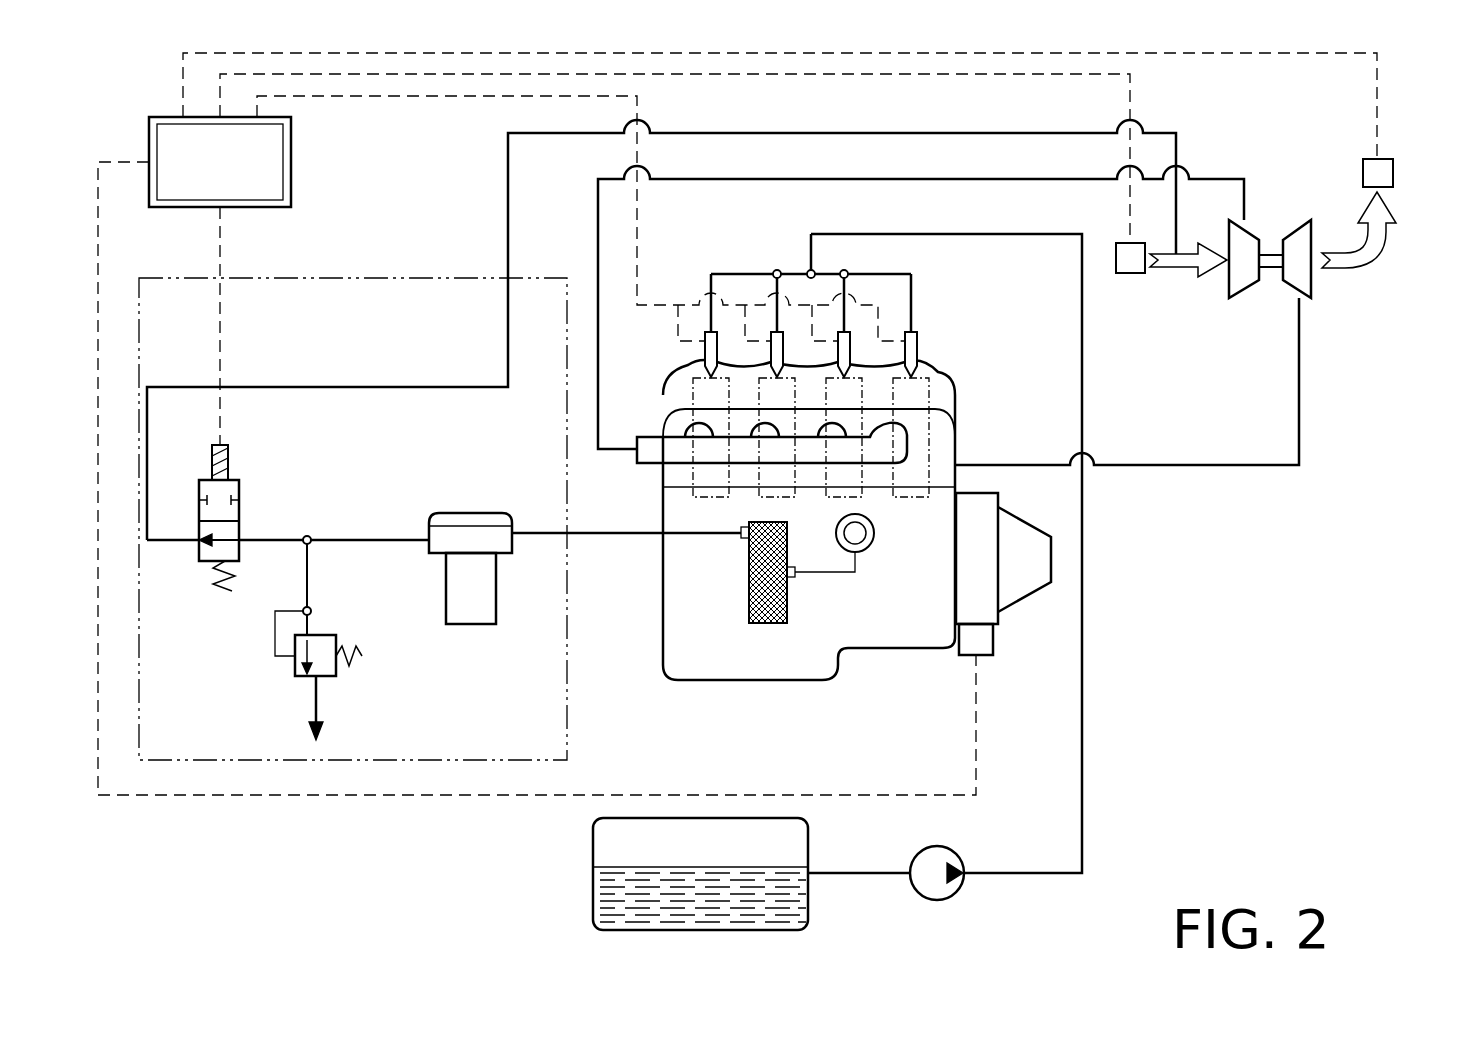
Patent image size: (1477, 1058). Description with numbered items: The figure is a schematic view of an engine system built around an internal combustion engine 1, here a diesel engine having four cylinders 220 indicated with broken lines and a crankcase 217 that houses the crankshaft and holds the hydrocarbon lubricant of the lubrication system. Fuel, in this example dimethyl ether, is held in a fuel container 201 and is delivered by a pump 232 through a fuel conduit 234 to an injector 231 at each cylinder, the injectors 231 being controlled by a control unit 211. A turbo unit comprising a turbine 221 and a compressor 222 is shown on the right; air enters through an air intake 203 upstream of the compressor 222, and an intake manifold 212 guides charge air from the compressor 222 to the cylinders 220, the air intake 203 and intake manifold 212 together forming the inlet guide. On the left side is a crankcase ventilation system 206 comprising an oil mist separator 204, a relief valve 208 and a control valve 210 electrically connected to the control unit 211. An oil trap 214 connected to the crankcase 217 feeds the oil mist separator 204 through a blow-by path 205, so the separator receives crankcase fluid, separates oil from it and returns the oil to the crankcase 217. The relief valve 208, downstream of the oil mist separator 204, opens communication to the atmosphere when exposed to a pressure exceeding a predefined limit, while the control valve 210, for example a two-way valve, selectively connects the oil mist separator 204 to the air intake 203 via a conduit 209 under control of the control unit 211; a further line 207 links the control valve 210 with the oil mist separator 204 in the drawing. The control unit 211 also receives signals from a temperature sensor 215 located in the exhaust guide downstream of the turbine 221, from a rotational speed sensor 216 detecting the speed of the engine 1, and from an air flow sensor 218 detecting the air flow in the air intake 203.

The internal combustion engine 1 is at (913, 553).
The fuel container 201 is at (593, 880).
The air intake 203 is at (1178, 268).
The oil mist separator 204 is at (462, 513).
The blow-by path 205 is at (532, 532).
The crankcase ventilation system 206 is at (213, 762).
The line 207 is at (345, 540).
The relief valve 208 is at (294, 663).
The conduit 209 is at (508, 210).
The control valve 210 is at (240, 492).
The control unit 211 is at (291, 162).
The intake manifold 212 is at (598, 210).
The oil trap 214 is at (768, 625).
The temperature sensor 215 is at (1393, 173).
The rotational speed sensor 216 is at (993, 640).
The crankcase 217 is at (862, 605).
The air flow sensor 218 is at (1127, 273).
The cylinders 220 is at (695, 392).
The turbine 221 is at (1291, 288).
The compressor 222 is at (1232, 298).
The injector 231 is at (771, 336).
The pump 232 is at (940, 900).
The fuel conduit 234 is at (1025, 873).